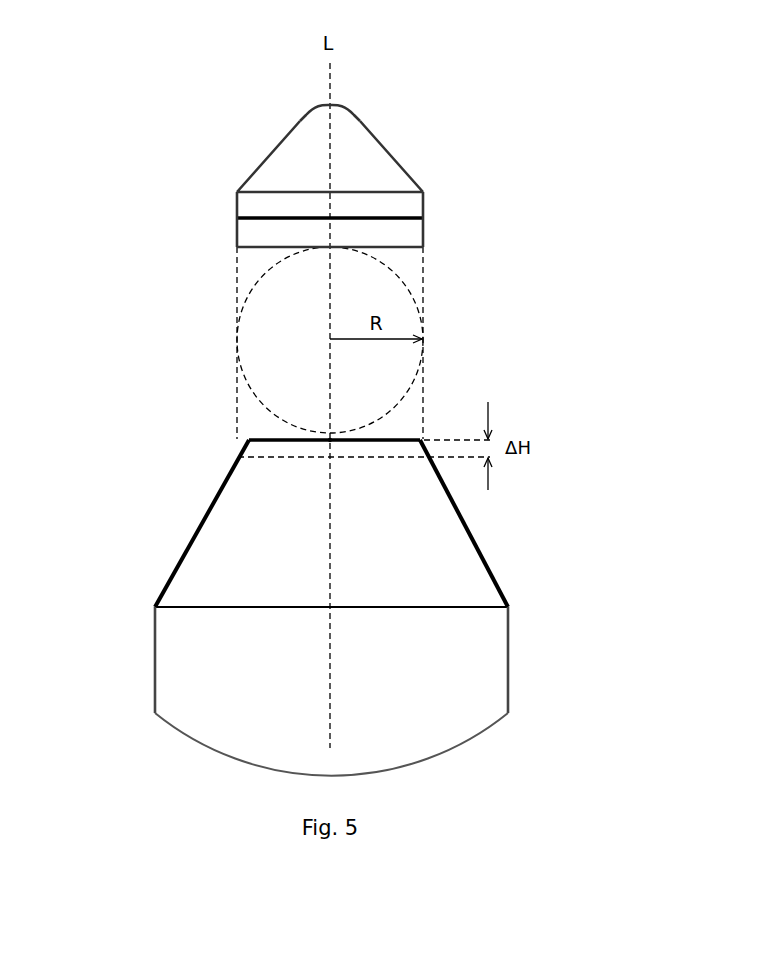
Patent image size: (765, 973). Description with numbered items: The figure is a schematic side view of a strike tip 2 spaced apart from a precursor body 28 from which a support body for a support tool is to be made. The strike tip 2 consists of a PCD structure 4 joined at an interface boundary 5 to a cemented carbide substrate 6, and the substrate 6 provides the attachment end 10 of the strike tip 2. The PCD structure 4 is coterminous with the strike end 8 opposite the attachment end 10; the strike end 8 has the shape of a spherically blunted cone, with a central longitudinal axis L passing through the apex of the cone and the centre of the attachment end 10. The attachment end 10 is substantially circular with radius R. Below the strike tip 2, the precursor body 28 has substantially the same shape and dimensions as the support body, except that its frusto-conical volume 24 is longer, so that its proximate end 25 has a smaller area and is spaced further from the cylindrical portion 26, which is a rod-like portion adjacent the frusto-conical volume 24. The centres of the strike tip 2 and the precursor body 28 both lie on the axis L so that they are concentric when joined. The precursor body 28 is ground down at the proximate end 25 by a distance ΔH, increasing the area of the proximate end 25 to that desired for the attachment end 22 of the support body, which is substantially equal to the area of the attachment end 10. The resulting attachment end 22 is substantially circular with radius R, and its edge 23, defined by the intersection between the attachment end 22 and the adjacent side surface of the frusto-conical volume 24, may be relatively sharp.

The strike tip 2 is at (344, 177).
The PCD structure 4 is at (295, 173).
The interface boundary 5 is at (364, 215).
The cemented carbide substrate 6 is at (296, 233).
The strike end 8 is at (303, 96).
The attachment end 10 is at (396, 249).
The attachment end 22 is at (293, 435).
The edge 23 is at (240, 457).
The frusto-conical volume 24 is at (197, 522).
The proximate end 25 is at (248, 406).
The cylindrical portion 26 is at (188, 654).
The precursor body 28 is at (498, 523).